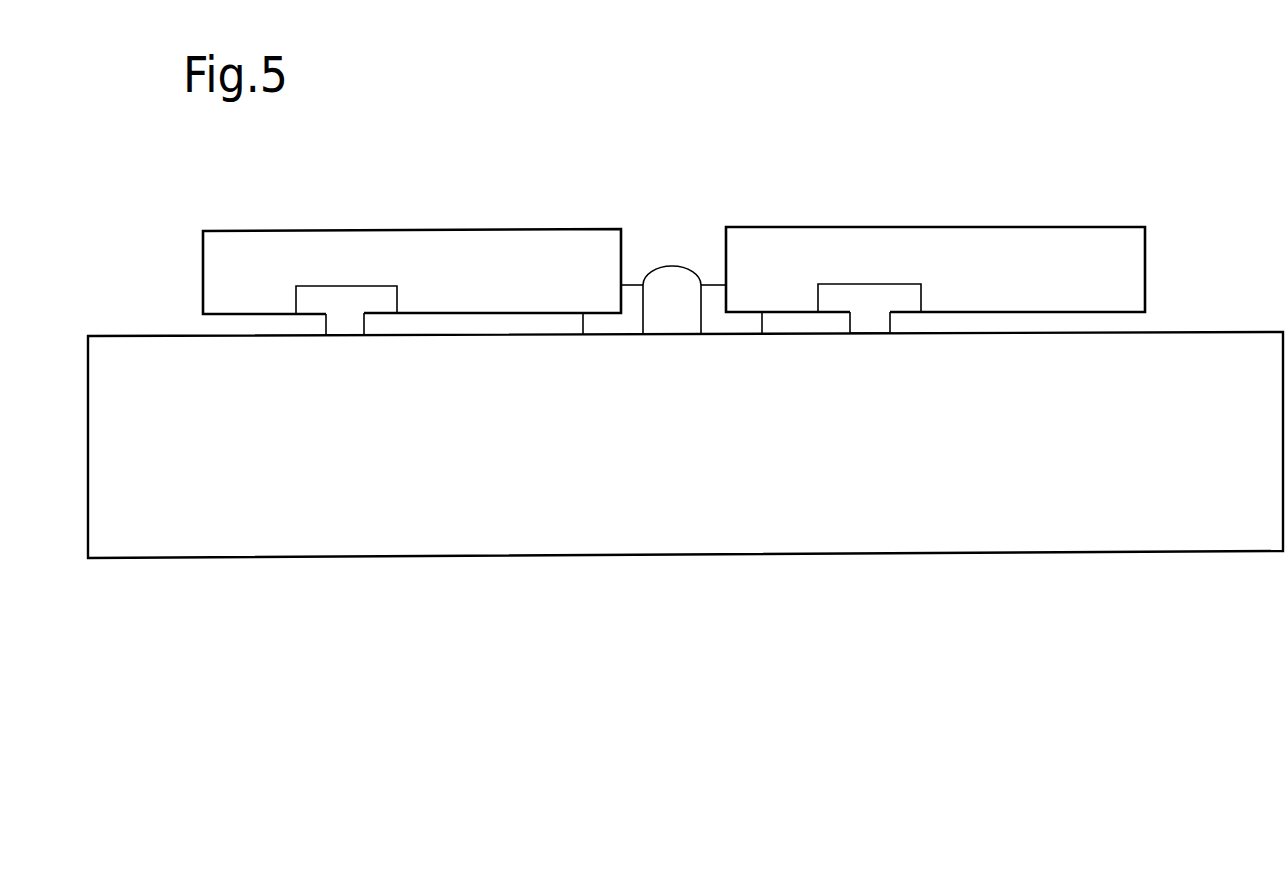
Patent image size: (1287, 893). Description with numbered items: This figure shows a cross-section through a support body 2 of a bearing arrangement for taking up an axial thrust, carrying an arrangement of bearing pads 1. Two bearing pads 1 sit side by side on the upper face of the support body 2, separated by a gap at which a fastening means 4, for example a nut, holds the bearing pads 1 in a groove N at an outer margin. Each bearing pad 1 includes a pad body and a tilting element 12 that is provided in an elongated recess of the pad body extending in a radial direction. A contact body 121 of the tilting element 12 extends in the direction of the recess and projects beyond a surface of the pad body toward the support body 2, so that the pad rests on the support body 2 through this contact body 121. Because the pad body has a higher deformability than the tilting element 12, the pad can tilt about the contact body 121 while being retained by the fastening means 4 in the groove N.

The bearing pad 1 is at (235, 263).
The support body 2 is at (401, 498).
The fastening means 4 is at (676, 277).
The tilting element 12 is at (317, 302).
The contact body 121 is at (350, 325).
The groove N is at (623, 283).